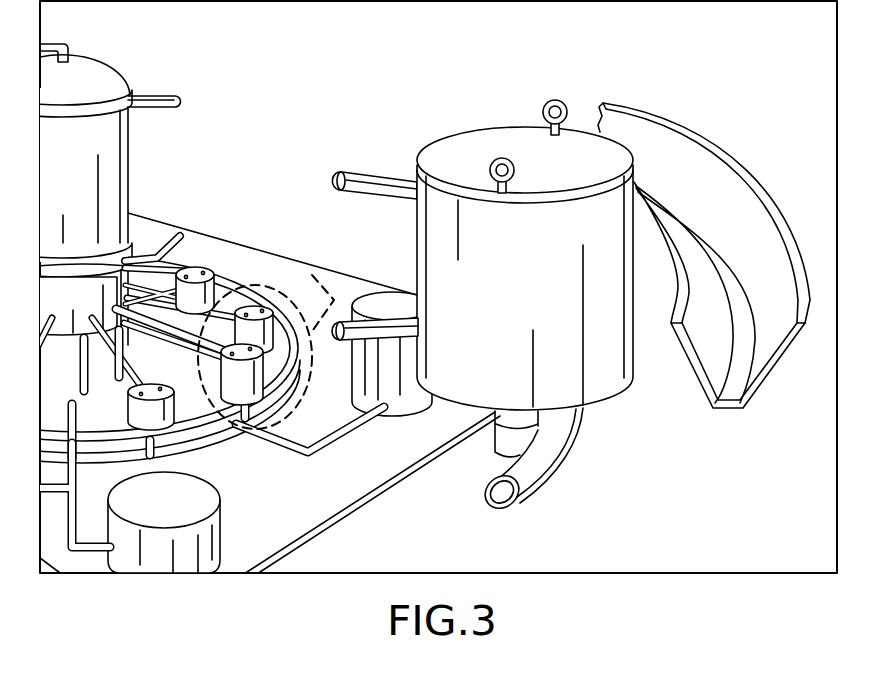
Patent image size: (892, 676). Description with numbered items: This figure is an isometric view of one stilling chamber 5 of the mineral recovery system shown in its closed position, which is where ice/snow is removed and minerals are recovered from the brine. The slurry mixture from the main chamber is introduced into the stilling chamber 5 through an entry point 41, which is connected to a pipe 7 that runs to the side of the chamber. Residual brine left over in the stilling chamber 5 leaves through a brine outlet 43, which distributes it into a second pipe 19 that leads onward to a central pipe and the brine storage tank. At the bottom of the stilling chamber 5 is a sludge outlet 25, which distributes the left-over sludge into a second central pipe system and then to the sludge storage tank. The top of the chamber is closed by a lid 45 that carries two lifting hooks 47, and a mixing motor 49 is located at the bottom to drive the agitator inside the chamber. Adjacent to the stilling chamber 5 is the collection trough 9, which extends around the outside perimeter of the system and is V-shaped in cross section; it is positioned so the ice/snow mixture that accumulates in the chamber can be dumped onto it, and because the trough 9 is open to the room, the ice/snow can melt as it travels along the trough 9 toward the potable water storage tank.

The stilling chamber 5 is at (536, 301).
The pipe 7 is at (348, 193).
The collection trough 9 is at (773, 365).
The second pipe 19 is at (344, 330).
The sludge outlet 25 is at (543, 480).
The entry point 41 is at (415, 180).
The brine outlet 43 is at (421, 327).
The lid 45 is at (488, 128).
The lifting hooks 47 is at (491, 162).
The mixing motor 49 is at (492, 445).